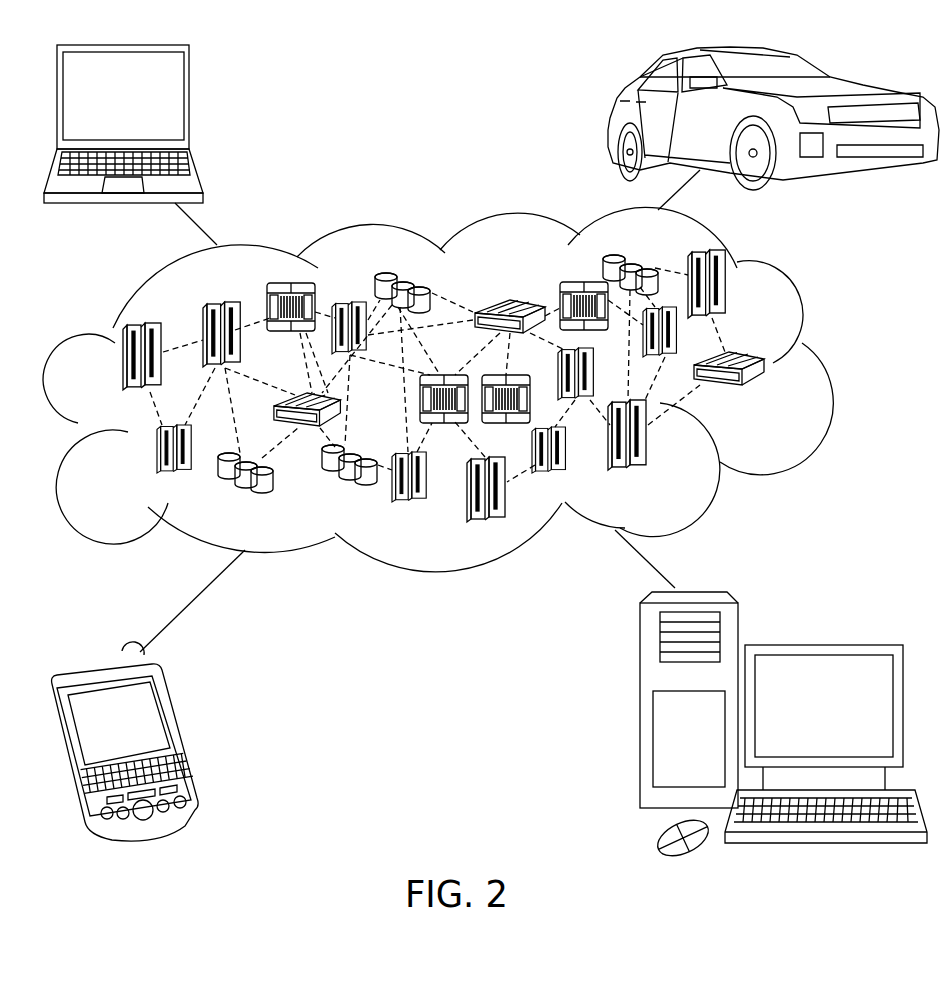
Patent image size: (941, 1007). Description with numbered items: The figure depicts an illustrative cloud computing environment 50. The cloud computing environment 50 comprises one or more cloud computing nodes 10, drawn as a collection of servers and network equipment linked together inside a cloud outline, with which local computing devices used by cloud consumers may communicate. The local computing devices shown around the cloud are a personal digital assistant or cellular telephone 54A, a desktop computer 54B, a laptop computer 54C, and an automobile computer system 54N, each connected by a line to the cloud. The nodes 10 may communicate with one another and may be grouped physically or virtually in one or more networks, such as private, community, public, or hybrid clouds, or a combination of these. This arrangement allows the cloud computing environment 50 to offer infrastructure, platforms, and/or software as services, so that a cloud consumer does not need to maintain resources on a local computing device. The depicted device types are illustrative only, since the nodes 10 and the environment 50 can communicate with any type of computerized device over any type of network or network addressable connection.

The cloud computing node 10 is at (768, 397).
The cloud computing environment 50 is at (822, 367).
The personal digital assistant or cellular telephone 54A is at (182, 737).
The desktop computer 54B is at (822, 643).
The laptop computer 54C is at (189, 103).
The automobile computer system 54N is at (612, 118).